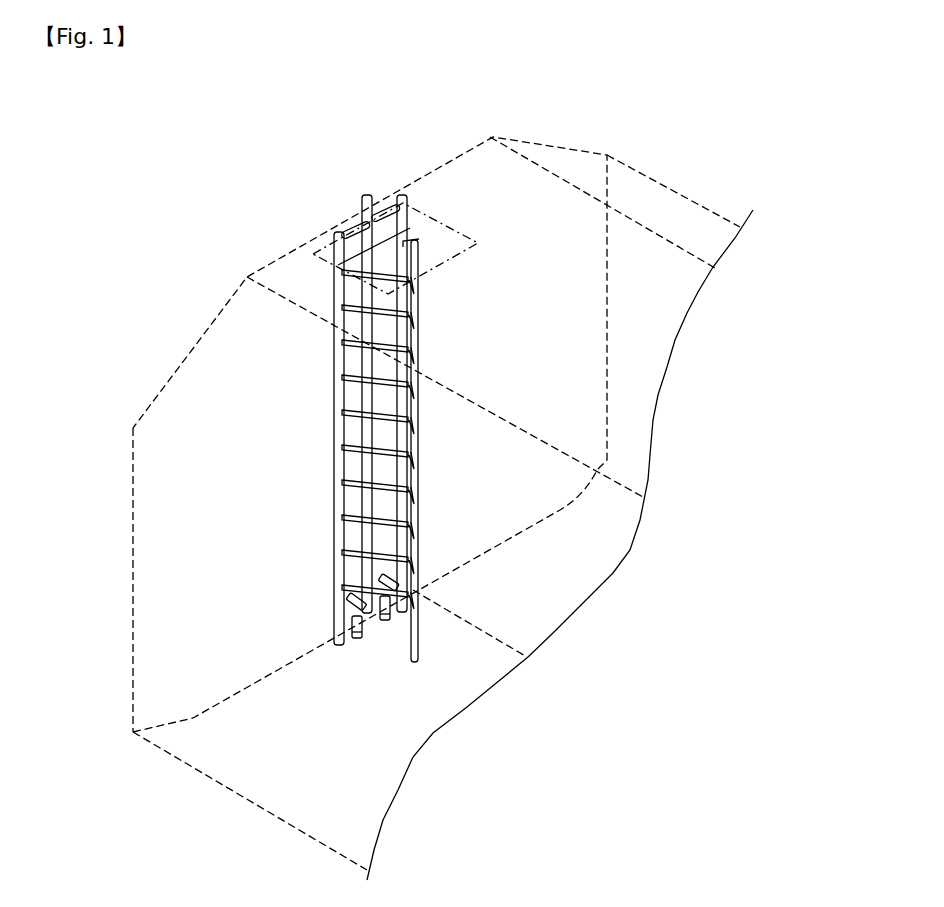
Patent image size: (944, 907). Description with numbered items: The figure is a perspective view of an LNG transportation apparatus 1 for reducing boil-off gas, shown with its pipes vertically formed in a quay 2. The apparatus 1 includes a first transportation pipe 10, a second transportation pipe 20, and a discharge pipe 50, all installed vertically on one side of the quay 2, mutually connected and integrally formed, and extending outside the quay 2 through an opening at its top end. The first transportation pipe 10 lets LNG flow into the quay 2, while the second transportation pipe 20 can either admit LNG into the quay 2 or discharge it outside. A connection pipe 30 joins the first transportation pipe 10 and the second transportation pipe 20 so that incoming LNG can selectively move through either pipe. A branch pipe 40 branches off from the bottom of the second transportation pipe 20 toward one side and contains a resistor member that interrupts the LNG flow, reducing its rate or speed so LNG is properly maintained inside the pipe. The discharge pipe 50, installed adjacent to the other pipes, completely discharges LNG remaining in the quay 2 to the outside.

The LNG transportation apparatus 1 is at (392, 167).
The quay 2 is at (233, 792).
The first transportation pipe 10 is at (370, 250).
The second transportation pipe 20 is at (395, 300).
The connection pipe 30 is at (388, 215).
The branch pipe 40 is at (372, 620).
The discharge pipe 50 is at (420, 318).